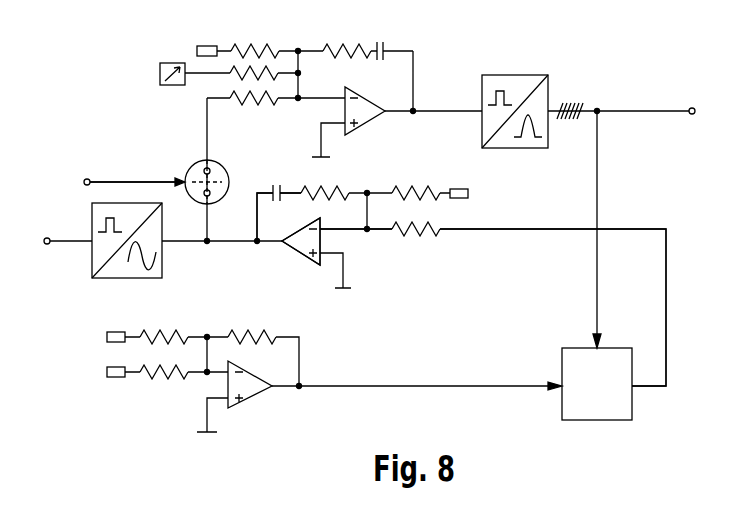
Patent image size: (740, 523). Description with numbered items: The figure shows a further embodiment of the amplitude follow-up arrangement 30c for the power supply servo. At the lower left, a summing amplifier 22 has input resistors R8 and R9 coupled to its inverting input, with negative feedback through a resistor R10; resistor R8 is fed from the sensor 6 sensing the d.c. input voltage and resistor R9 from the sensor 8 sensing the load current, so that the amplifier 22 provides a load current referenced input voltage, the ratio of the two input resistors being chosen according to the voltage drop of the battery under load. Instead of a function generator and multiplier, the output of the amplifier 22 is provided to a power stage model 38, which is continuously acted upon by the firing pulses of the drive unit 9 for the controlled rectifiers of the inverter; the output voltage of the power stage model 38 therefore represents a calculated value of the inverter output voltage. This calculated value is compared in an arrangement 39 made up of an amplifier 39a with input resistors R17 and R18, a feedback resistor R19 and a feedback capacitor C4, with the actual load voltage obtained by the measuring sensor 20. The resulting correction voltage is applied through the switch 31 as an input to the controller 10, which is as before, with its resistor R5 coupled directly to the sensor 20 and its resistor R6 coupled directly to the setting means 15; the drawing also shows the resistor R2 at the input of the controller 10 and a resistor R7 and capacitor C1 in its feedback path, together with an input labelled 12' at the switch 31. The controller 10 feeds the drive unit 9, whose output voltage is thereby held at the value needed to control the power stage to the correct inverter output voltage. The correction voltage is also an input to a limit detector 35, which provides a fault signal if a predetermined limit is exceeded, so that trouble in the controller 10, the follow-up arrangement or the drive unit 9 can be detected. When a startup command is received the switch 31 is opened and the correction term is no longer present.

The setting means 15 is at (173, 62).
The measuring sensor 20 is at (206, 46).
The resistor R5 is at (243, 46).
The resistor R7 is at (344, 45).
The capacitor C1 is at (388, 45).
The resistor R6 is at (275, 75).
The resistor R2 is at (250, 103).
The controller 10 is at (402, 96).
The drive unit 9 is at (518, 75).
The switch 31 is at (225, 168).
The input signal 12' is at (107, 186).
The limit detector 35 is at (92, 262).
The feedback capacitor C4 is at (283, 175).
The arrangement 39 is at (285, 233).
The amplifier 39a is at (300, 254).
The feedback resistor R19 is at (327, 188).
The input resistor R18 is at (407, 188).
The input resistor R17 is at (432, 234).
The amplitude follow-up arrangement 30c is at (470, 304).
The sensor 6 is at (108, 333).
The sensor 8 is at (108, 370).
The input resistor R8 is at (145, 333).
The feedback resistor R10 is at (252, 333).
The input resistor R9 is at (160, 380).
The summing amplifier 22 is at (248, 397).
The power stage model 38 is at (598, 428).